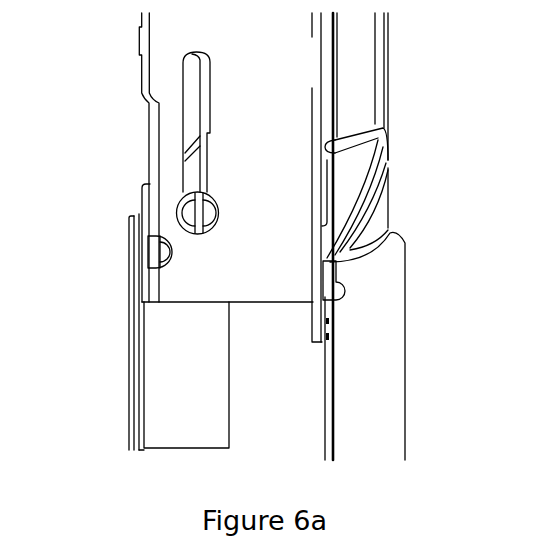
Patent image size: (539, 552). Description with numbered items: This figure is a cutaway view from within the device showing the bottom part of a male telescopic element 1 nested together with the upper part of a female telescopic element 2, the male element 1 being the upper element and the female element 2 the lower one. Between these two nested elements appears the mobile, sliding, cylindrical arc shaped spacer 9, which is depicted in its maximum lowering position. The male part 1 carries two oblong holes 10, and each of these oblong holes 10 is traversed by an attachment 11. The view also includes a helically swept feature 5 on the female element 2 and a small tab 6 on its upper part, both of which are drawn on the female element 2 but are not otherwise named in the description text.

The male telescopic element 1 is at (112, 73).
The female telescopic element 2 is at (428, 358).
The helical guide 5 is at (397, 187).
The locking tab 6 is at (370, 278).
The mobile sliding cylindrical arc shaped spacer 9 is at (140, 389).
The oblong holes 10 is at (166, 137).
The attachment 11 is at (158, 216).